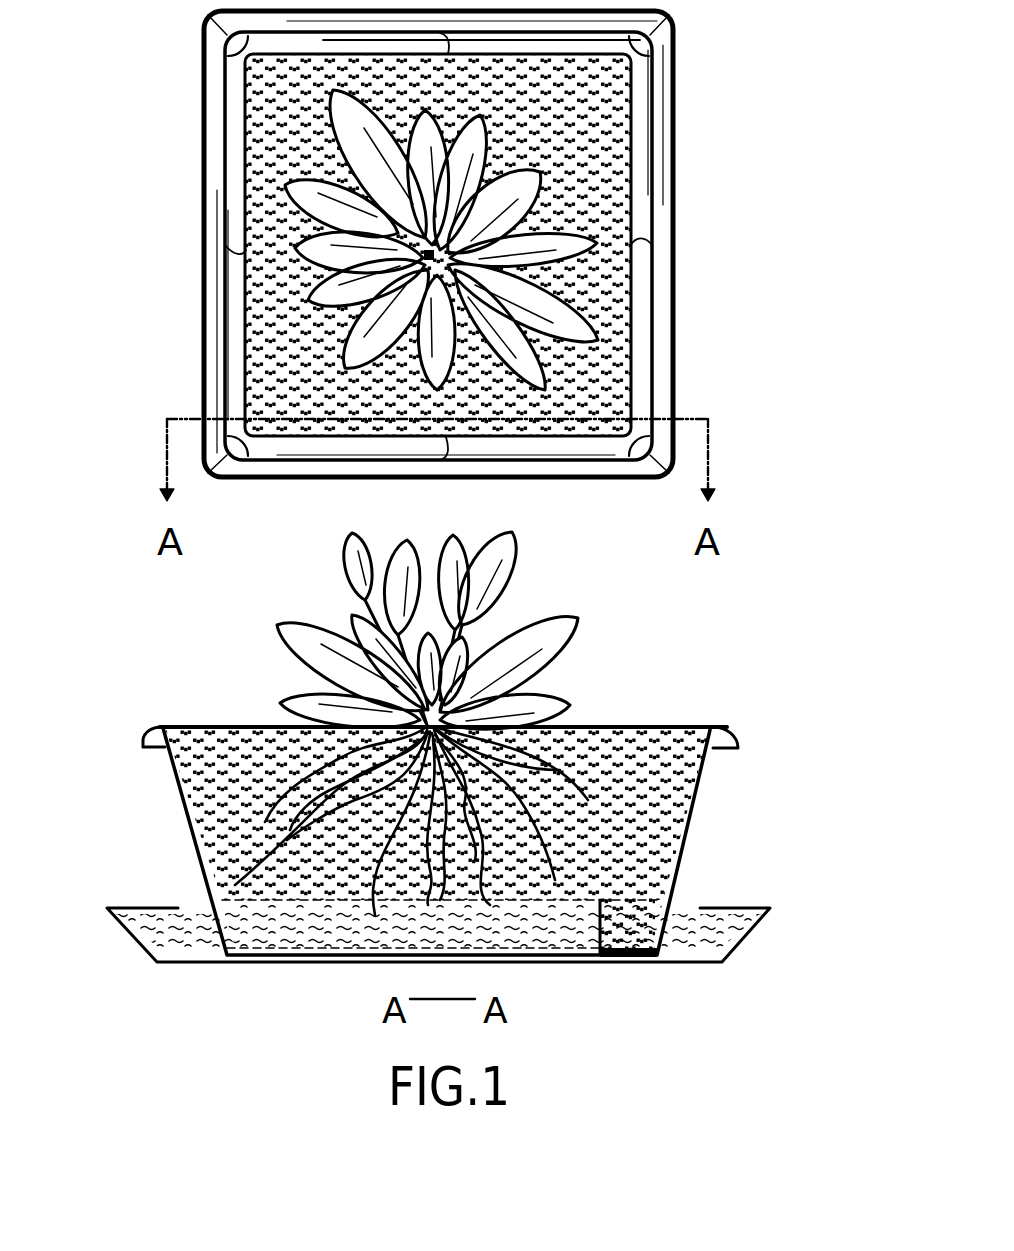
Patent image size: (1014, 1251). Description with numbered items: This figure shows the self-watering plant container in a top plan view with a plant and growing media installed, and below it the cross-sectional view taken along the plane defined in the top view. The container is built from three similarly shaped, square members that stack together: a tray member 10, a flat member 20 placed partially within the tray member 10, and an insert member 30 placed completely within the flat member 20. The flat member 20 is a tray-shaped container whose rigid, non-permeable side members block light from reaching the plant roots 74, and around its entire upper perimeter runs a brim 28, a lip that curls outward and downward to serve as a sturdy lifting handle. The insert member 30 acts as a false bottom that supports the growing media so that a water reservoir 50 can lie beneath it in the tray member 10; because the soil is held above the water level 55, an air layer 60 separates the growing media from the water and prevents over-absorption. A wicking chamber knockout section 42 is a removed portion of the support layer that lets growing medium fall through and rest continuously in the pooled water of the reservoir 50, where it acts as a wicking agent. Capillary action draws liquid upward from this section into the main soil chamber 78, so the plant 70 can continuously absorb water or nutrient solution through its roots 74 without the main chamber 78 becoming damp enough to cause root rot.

The tray member 10 is at (663, 147).
The flat member 20 is at (641, 292).
The brim 28 is at (737, 730).
The insert member 30 is at (517, 900).
The wicking chamber knockout section 42 is at (627, 920).
The water reservoir 50 is at (517, 933).
The water level 55 is at (627, 955).
The air layer 60 is at (560, 910).
The plant 70 is at (305, 198).
The plant roots 74 is at (563, 767).
The main soil chamber 78 is at (270, 362).